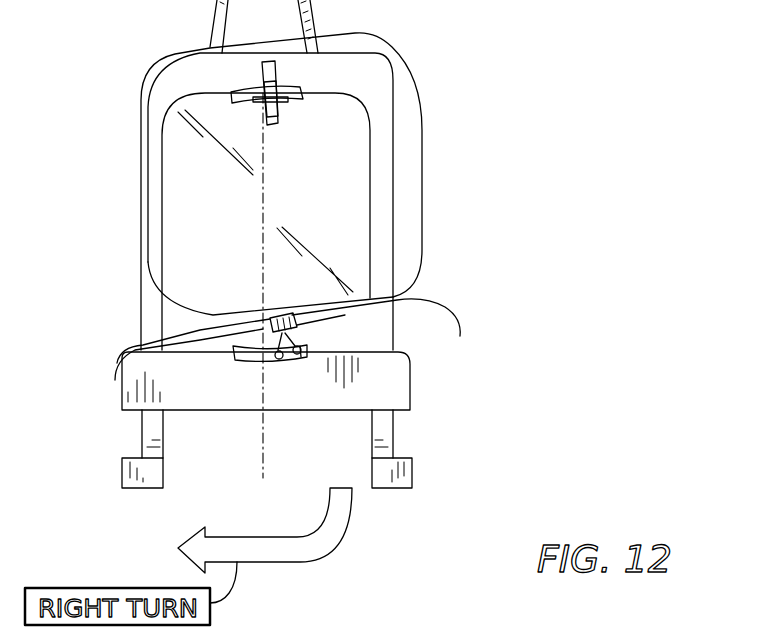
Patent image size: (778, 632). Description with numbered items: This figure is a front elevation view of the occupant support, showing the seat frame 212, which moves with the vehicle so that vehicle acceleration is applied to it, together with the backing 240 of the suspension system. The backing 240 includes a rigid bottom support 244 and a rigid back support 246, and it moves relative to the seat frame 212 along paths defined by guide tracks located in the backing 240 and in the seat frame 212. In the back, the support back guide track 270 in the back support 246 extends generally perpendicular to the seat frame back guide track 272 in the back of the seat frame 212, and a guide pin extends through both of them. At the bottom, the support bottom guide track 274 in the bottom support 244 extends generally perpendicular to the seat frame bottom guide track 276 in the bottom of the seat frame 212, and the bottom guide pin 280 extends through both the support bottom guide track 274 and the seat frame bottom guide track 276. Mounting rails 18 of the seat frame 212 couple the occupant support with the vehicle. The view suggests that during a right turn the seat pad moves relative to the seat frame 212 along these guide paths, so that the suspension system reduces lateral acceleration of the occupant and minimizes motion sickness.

The mounting rails 18 is at (404, 503).
The seat frame 212 is at (409, 435).
The backing 240 is at (433, 210).
The bottom support 244 is at (473, 306).
The back support 246 is at (136, 273).
The support back guide track 270 is at (282, 126).
The seat frame back guide track 272 is at (302, 90).
The support bottom guide track 274 is at (117, 366).
The seat frame bottom guide track 276 is at (248, 375).
The bottom guide pin 280 is at (313, 334).